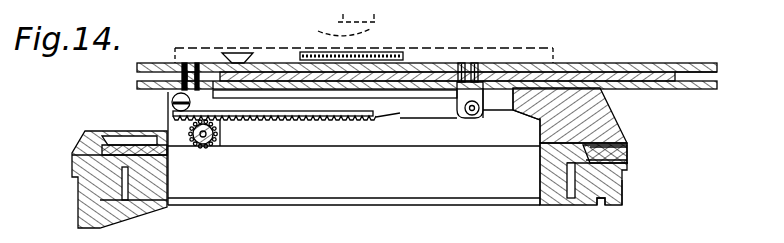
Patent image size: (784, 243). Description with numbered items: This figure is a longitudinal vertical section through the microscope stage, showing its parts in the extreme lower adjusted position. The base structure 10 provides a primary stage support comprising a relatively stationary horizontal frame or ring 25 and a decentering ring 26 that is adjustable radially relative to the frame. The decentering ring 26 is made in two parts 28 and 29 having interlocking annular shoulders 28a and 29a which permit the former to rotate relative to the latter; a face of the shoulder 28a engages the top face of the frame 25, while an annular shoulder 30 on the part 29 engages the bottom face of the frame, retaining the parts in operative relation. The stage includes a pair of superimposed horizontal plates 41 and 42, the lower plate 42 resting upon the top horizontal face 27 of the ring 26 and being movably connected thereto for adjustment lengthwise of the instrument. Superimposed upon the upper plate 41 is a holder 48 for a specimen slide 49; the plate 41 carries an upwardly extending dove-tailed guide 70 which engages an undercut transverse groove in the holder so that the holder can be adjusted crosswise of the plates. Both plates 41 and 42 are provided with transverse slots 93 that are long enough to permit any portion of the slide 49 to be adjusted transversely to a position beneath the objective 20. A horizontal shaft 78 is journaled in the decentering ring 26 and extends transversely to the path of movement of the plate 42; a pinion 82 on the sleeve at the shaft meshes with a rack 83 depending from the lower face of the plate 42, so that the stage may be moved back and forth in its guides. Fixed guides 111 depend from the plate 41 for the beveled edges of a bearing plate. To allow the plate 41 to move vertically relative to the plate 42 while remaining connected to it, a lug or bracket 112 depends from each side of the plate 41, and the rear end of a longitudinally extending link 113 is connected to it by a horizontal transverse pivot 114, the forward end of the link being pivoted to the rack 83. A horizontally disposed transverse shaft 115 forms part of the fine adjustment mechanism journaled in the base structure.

The base structure 10 is at (622, 192).
The objective 20 is at (326, 27).
The horizontal frame or ring 25 is at (623, 200).
The decentering ring 26 is at (590, 122).
The top horizontal face 27 is at (578, 86).
The ring part 28 is at (354, 146).
The annular shoulder 28a is at (587, 160).
The ring part 29 is at (354, 161).
The annular shoulder 29a is at (590, 148).
The annular shoulder 30 is at (598, 205).
The upper stage plate 41 is at (707, 63).
The lower stage plate 42 is at (719, 85).
The holder 48 is at (553, 47).
The slide 49 is at (386, 51).
The dove-tailed guide 70 is at (237, 53).
The horizontal shaft 78 is at (204, 148).
The pinion 82 is at (204, 148).
The rack 83 is at (255, 121).
The transverse slot 93 is at (197, 80).
The fixed guide 111 is at (657, 72).
The lug or bracket 112 is at (458, 116).
The link 113 is at (418, 100).
The horizontal transverse pivot 114 is at (472, 116).
The transverse shaft 115 is at (171, 103).